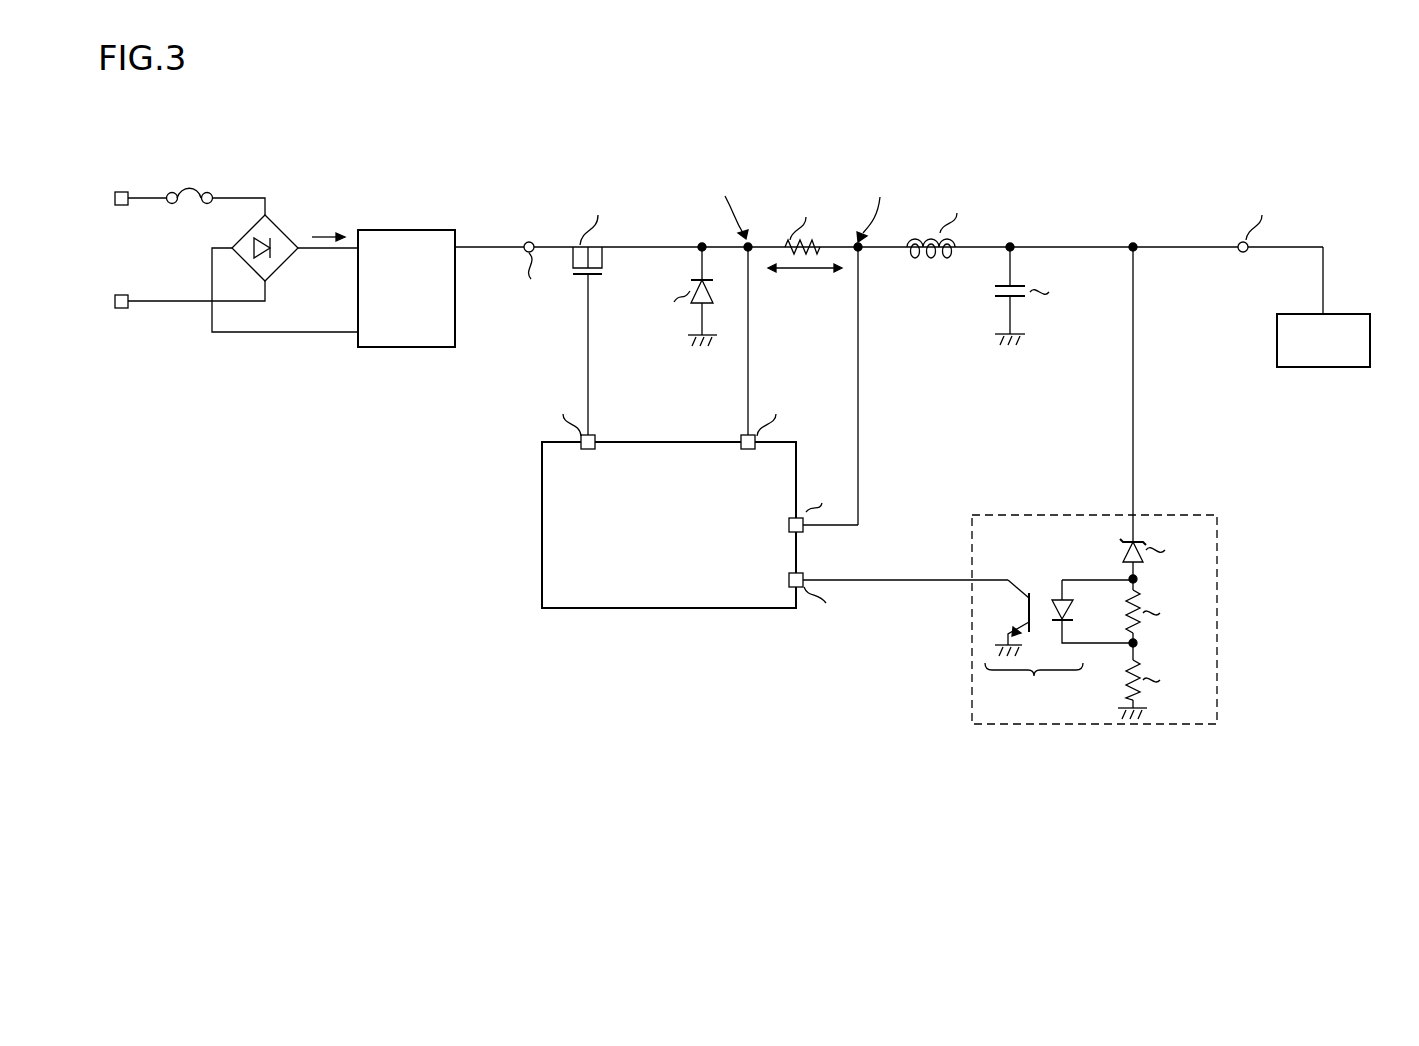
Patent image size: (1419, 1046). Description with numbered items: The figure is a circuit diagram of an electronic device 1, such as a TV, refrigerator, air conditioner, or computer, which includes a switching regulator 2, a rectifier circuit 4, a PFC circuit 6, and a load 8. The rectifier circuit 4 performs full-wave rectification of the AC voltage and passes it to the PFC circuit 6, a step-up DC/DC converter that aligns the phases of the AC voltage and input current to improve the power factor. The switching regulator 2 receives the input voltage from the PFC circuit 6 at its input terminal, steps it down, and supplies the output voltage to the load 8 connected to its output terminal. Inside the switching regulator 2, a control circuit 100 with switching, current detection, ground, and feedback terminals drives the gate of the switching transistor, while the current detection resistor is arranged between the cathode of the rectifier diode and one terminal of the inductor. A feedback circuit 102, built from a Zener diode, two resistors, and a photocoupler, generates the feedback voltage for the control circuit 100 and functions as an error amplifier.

The electronic device 1 is at (777, 873).
The switching regulator 2 is at (1230, 758).
The rectifier circuit 4 is at (274, 222).
The PFC circuit 6 is at (410, 229).
The load 8 is at (1372, 335).
The control circuit 100 is at (672, 610).
The feedback circuit 102 is at (1218, 665).